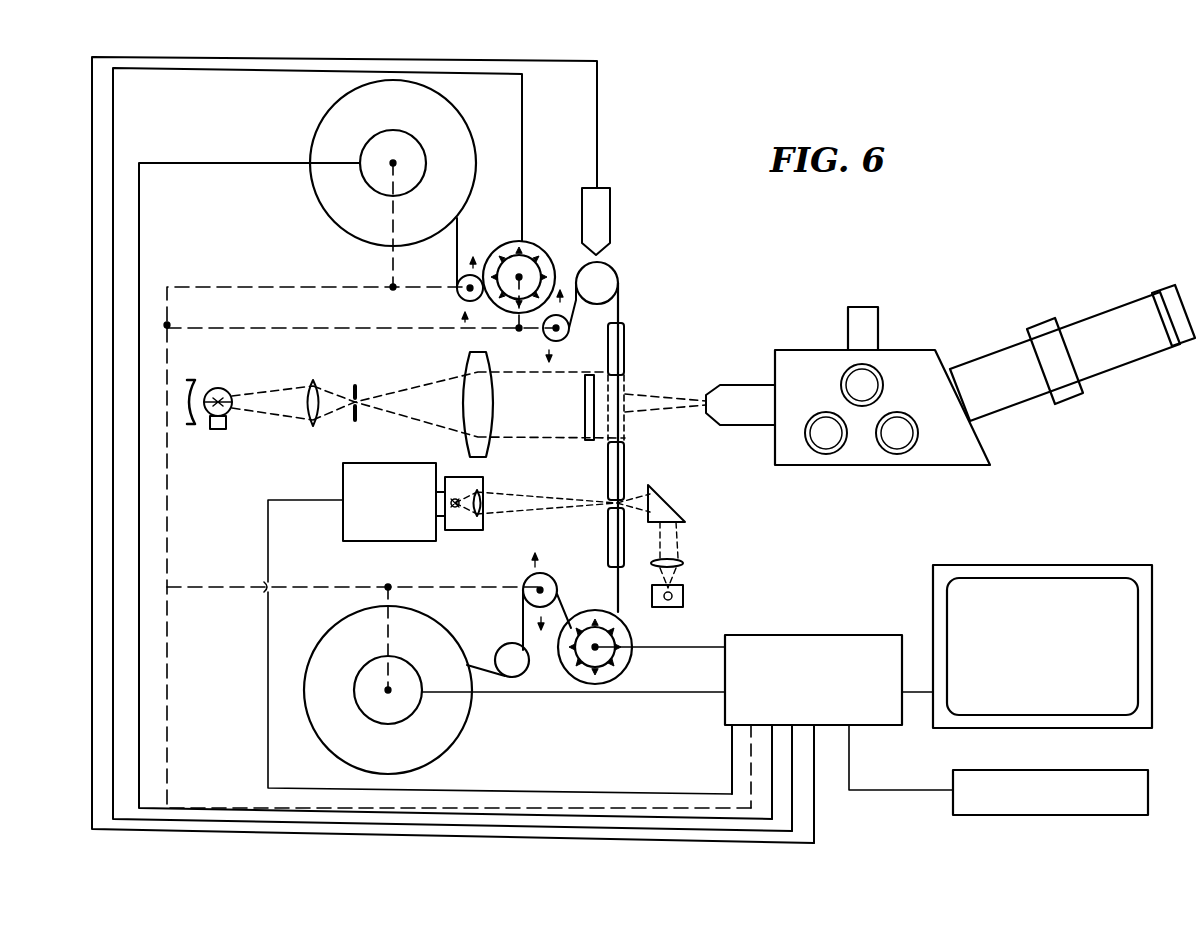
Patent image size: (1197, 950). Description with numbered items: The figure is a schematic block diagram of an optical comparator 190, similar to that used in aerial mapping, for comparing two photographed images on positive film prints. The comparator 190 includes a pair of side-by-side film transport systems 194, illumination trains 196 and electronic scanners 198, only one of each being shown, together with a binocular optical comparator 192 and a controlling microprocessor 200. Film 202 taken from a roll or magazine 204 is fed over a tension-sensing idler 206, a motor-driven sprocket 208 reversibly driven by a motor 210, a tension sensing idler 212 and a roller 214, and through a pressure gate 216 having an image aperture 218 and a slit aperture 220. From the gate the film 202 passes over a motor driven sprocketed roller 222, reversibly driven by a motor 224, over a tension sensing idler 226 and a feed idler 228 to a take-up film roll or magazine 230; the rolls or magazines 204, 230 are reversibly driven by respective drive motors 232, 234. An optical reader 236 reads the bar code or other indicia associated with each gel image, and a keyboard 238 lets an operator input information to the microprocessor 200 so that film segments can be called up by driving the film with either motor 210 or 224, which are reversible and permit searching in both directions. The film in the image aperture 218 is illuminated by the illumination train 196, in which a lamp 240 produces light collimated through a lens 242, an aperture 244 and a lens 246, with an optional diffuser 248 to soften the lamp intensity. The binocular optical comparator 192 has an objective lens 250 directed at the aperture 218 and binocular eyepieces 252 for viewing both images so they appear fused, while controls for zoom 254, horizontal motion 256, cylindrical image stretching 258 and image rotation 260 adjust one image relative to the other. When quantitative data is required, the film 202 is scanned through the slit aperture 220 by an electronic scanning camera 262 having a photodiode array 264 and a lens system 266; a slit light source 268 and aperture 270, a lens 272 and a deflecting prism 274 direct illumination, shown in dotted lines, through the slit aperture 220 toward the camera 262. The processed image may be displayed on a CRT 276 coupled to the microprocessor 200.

The optical comparator 190 is at (683, 300).
The binocular optical comparator 192 is at (905, 340).
The film transport system 194 is at (432, 261).
The illumination train 196 is at (394, 392).
The electronic scanner 198 is at (366, 544).
The microprocessor 200 is at (826, 679).
The film 202 is at (458, 236).
The roll or magazine 204 is at (445, 114).
The tension-sensing idler 206 is at (460, 297).
The motor-driven sprocket 208 is at (524, 264).
The motor 210 is at (556, 250).
The tension sensing idler 212 is at (565, 339).
The roller 214 is at (607, 276).
The pressure gate 216 is at (626, 345).
The image aperture 218 is at (627, 386).
The slit aperture 220 is at (627, 496).
The motor driven sprocketed roller 222 is at (591, 662).
The motor 224 is at (629, 661).
The tension sensing idler 226 is at (530, 583).
The feed idler 228 is at (505, 644).
The take-up film roll or magazine 230 is at (345, 630).
The drive motor 232 is at (393, 130).
The drive motor 234 is at (370, 670).
The optical reader 236 is at (601, 212).
The keyboard 238 is at (1062, 805).
The lamp 240 is at (218, 388).
The lens 242 is at (310, 380).
The aperture 244 is at (354, 386).
The lens 246 is at (468, 372).
The diffuser 248 is at (585, 393).
The objective lens 250 is at (740, 385).
The binocular eyepieces 252 is at (1165, 287).
The zoom control 254 is at (856, 307).
The horizontal motion control 256 is at (882, 384).
The cylindrical image stretching control 258 is at (818, 416).
The image rotation control 260 is at (912, 442).
The electronic scanning camera 262 is at (406, 501).
The photodiode array 264 is at (470, 478).
The lens system 266 is at (482, 503).
The slit light source 268 is at (685, 598).
The aperture 270 is at (673, 594).
The lens 272 is at (683, 562).
The deflecting prism 274 is at (683, 506).
The CRT 276 is at (1057, 640).